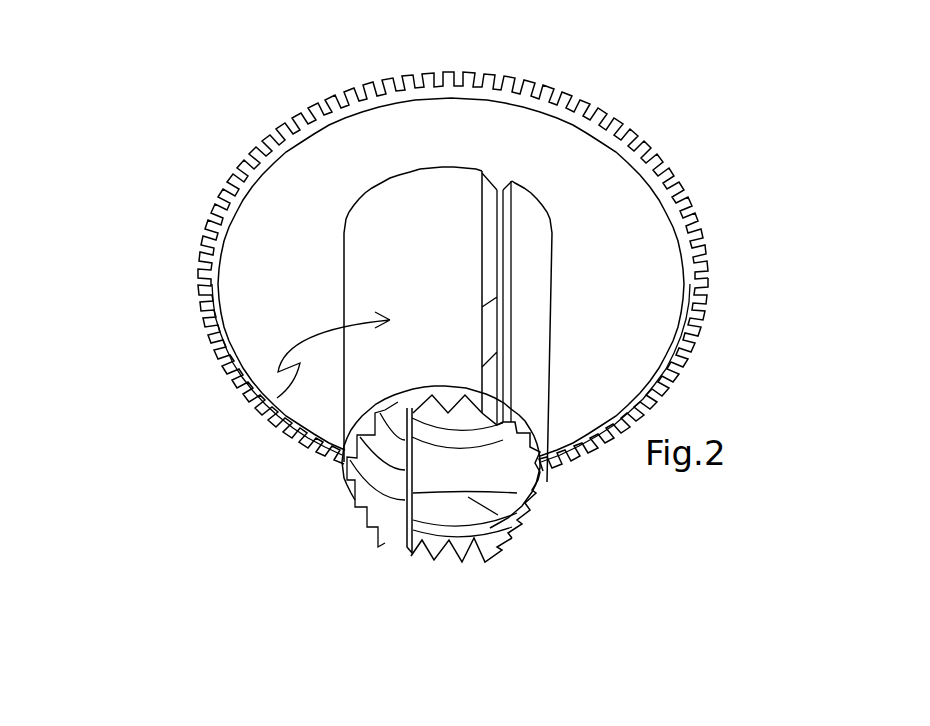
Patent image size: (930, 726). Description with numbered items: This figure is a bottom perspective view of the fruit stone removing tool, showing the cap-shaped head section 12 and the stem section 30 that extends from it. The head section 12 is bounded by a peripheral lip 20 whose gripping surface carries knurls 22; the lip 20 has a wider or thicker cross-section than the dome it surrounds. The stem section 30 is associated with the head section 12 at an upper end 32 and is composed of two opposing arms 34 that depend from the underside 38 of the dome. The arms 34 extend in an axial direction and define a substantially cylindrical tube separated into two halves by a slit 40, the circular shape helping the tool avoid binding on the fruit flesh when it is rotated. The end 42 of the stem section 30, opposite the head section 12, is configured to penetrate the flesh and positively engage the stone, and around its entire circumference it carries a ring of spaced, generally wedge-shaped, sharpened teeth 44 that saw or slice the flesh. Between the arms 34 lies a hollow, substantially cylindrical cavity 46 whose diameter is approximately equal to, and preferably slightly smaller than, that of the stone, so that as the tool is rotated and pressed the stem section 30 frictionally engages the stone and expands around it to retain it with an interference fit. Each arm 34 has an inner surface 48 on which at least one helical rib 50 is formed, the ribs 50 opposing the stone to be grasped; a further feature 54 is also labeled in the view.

The head section 12 is at (607, 0).
The peripheral lip 20 is at (243, 347).
The knurls 22 is at (200, 235).
The stem section 30 is at (358, 407).
The upper end 32 is at (537, 206).
The opposing arms 34 is at (410, 207).
The underside 38 is at (533, 137).
The slit 40 is at (497, 322).
The end 42 is at (353, 434).
The teeth 44 is at (440, 543).
The cavity 46 is at (453, 475).
The inner surface 48 is at (507, 463).
The helical rib 50 is at (462, 507).
The rim 54 is at (495, 505).